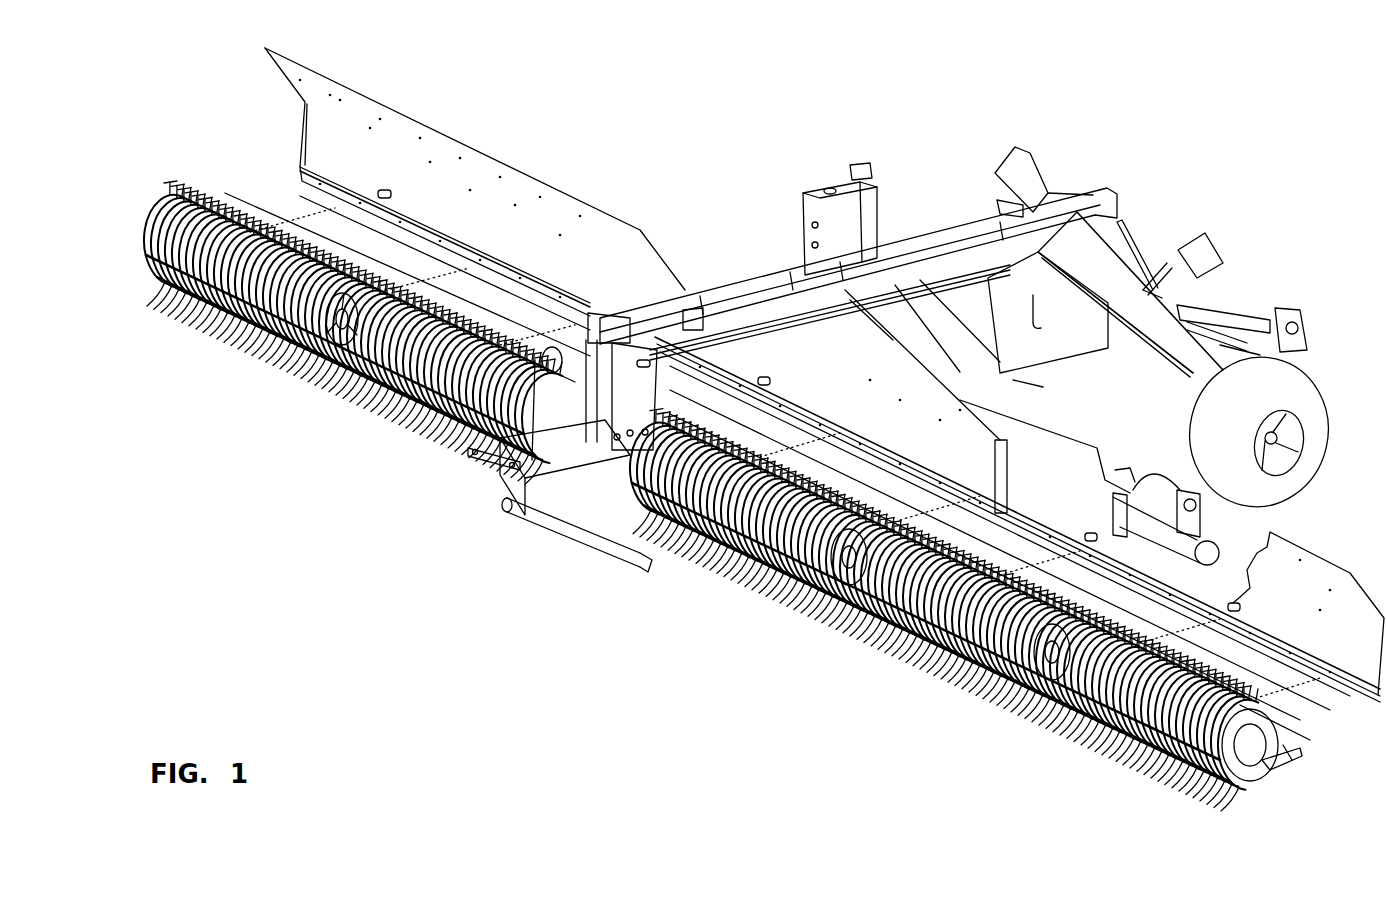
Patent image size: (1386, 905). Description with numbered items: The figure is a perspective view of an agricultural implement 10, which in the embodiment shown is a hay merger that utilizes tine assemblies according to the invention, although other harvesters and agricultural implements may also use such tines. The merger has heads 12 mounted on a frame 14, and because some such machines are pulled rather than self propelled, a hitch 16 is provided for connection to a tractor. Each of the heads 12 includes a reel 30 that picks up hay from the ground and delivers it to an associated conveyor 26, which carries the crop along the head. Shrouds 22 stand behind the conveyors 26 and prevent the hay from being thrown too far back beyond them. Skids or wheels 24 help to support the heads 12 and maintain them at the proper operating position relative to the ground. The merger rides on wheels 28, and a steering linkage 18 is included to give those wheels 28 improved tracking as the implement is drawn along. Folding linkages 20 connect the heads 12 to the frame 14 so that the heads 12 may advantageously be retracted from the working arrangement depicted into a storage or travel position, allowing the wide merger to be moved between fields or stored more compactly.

The agricultural implement 10 is at (694, 134).
The heads 12 is at (277, 376).
The frame 14 is at (905, 240).
The hitch 16 is at (505, 475).
The steering linkage 18 is at (585, 325).
The folding linkages 20 is at (1192, 518).
The shrouds 22 is at (382, 127).
The skids or wheels 24 is at (1270, 768).
The conveyor 26 is at (325, 225).
The wheels 28 is at (1312, 385).
The reel 30 is at (380, 380).